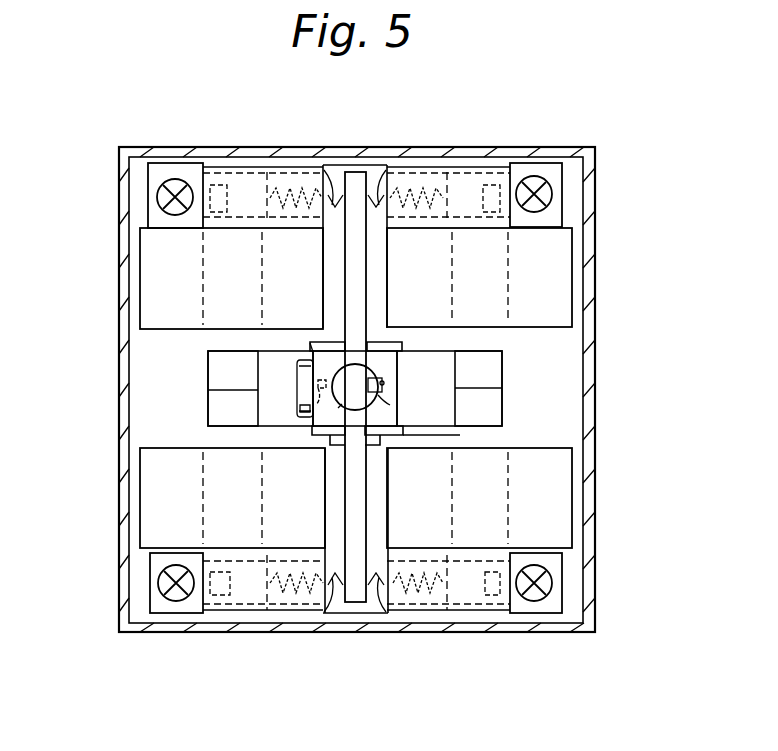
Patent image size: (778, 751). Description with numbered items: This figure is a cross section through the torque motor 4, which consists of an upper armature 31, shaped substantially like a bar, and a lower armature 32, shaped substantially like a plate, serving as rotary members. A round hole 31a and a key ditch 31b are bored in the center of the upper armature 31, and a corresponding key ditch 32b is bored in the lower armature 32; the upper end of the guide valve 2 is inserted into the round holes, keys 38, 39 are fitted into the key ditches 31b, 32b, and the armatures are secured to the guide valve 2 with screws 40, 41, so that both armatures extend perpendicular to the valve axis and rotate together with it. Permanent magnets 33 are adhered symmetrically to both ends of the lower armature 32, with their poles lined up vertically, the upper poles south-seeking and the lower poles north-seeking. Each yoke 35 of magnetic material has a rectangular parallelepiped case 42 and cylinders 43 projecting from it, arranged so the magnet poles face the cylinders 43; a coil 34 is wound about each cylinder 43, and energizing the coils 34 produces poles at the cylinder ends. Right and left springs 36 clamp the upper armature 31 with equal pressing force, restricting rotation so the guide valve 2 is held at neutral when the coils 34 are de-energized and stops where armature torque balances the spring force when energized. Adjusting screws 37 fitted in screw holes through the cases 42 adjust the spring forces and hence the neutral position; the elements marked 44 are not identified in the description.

The guide valve 2 is at (340, 408).
The torque motor 4 is at (620, 196).
The upper armature 31 is at (370, 172).
The round hole 31a is at (358, 364).
The key ditch 31b is at (384, 383).
The lower armature 32 is at (443, 343).
The key ditch 32b is at (308, 344).
The permanent magnets 33 is at (207, 370).
The coil 34 is at (140, 240).
The yokes 35 is at (297, 165).
The springs 36 is at (338, 175).
The adjusting screws 37 is at (267, 167).
The key 38 is at (392, 405).
The key 39 is at (300, 410).
The screw 40 is at (310, 427).
The screw 41 is at (403, 437).
The cases 42 is at (215, 185).
The cylinders 43 is at (200, 294).
The screws 44 is at (162, 175).